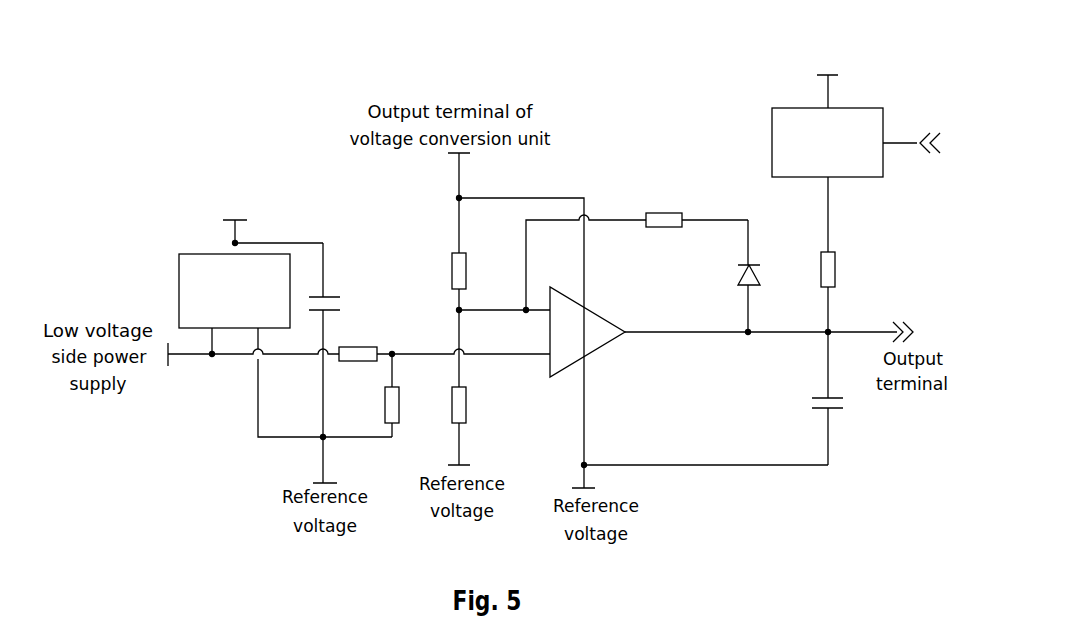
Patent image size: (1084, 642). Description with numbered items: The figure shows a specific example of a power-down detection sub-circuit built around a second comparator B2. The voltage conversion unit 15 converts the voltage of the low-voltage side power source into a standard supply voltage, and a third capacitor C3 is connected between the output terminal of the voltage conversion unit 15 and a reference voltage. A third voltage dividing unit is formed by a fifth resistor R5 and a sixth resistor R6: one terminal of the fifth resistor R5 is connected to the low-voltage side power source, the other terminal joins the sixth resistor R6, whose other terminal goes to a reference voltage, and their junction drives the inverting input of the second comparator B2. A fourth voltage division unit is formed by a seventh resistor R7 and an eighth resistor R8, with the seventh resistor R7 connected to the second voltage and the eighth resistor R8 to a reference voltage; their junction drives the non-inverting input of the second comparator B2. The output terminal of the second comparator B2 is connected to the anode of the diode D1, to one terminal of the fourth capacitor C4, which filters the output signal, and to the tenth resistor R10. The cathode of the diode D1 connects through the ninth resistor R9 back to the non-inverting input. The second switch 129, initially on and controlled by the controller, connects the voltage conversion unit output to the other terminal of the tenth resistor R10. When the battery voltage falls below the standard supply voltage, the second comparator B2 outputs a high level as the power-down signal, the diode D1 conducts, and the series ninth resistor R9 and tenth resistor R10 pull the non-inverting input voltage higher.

The voltage conversion unit 15 is at (248, 262).
The second switch 129 is at (839, 115).
The fifth resistor R5 is at (358, 364).
The sixth resistor R6 is at (378, 395).
The seventh resistor R7 is at (446, 271).
The eighth resistor R8 is at (446, 405).
The ninth resistor R9 is at (664, 233).
The tenth resistor R10 is at (811, 254).
The third capacitor C3 is at (335, 340).
The fourth capacitor C4 is at (815, 398).
The diode D1 is at (735, 276).
The second comparator B2 is at (587, 332).